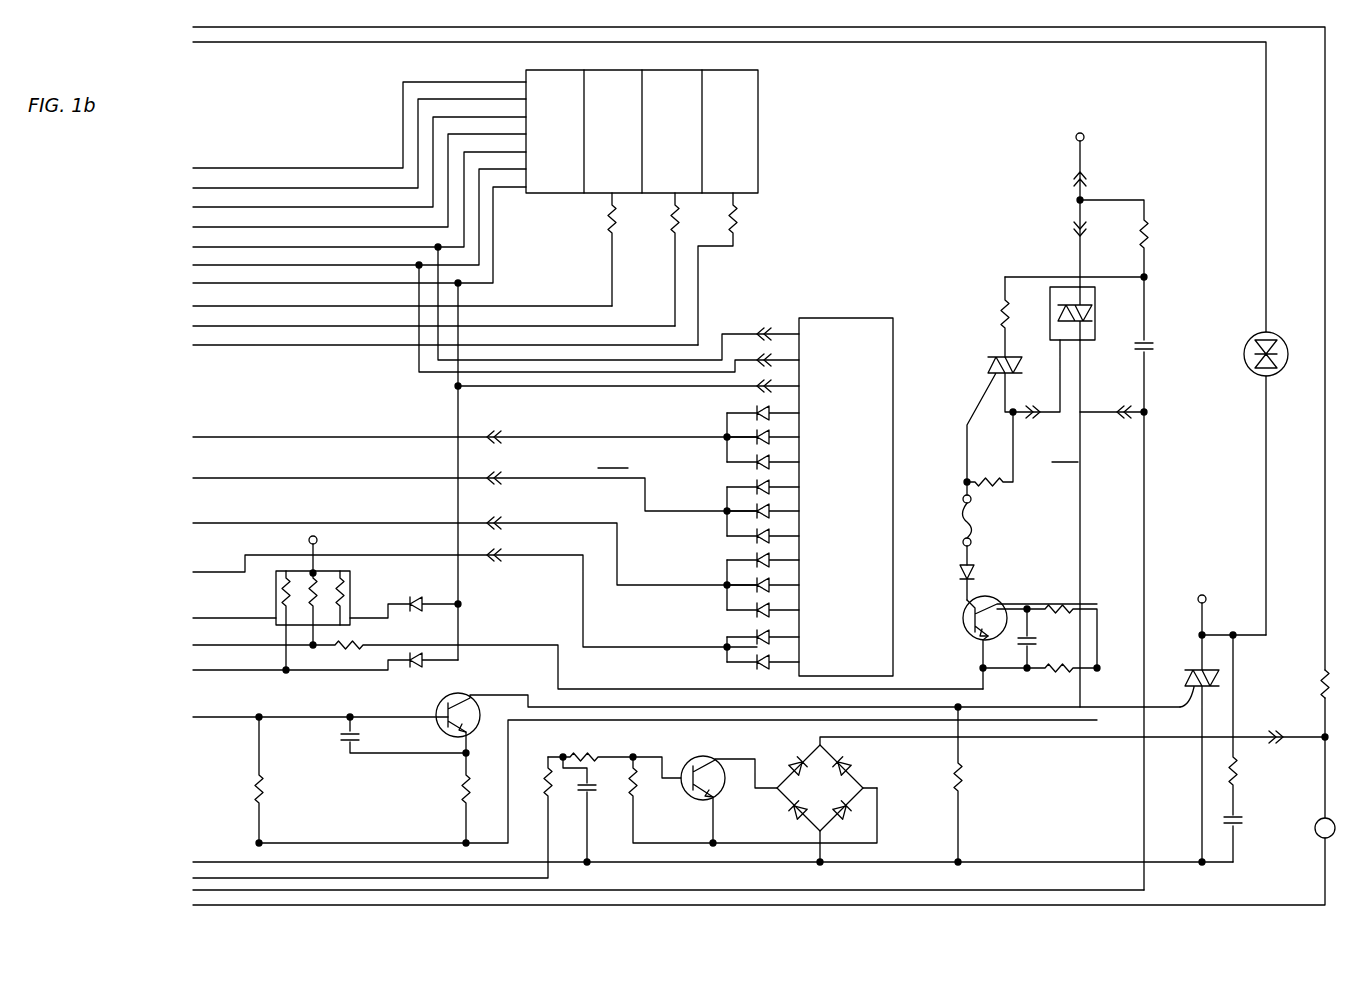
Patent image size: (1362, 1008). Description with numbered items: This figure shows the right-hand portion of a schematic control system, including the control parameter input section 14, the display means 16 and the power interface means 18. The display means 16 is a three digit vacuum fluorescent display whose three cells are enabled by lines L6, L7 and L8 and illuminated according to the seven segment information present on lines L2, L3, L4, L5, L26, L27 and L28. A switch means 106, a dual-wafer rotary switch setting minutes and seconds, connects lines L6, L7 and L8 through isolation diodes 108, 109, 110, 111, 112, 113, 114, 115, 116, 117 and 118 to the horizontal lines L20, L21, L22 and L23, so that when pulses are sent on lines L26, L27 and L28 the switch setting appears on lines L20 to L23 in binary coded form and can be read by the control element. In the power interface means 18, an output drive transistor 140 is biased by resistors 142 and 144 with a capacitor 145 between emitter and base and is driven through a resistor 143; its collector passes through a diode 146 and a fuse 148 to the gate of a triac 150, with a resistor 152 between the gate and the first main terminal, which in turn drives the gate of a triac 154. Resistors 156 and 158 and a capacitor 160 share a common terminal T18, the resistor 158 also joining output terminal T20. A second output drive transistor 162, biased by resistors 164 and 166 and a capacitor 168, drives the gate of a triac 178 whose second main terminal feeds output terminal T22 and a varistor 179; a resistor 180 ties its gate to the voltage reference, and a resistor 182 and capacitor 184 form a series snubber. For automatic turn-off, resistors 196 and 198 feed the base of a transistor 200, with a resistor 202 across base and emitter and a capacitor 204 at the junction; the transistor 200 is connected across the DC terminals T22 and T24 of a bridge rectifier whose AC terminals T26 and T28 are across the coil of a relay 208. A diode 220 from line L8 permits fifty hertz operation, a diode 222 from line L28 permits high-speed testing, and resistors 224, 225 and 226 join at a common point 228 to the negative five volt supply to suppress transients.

The display means 16 is at (760, 142).
The switch means 106 is at (815, 310).
The control parameter input section 14 is at (762, 546).
The power interface means 18 is at (1065, 451).
The isolation diode 108 is at (755, 412).
The isolation diode 109 is at (755, 435).
The isolation diode 110 is at (750, 460).
The isolation diode 111 is at (754, 475).
The isolation diode 112 is at (747, 516).
The isolation diode 113 is at (753, 539).
The isolation diode 114 is at (755, 555).
The isolation diode 115 is at (753, 592).
The isolation diode 116 is at (753, 615).
The isolation diode 117 is at (755, 646).
The isolation diode 118 is at (756, 674).
The output drive transistor 140 is at (964, 626).
The resistor 142 is at (1068, 674).
The resistor 143 is at (345, 651).
The resistor 144 is at (1060, 602).
The capacitor 145 is at (1037, 646).
The diode 146 is at (976, 573).
The fuse 148 is at (971, 527).
The triac 150 is at (1023, 392).
The resistor 152 is at (998, 488).
The triac 154 is at (1062, 272).
The resistor 156 is at (999, 312).
The resistor 158 is at (1148, 234).
The capacitor 160 is at (1150, 352).
The output drive transistor 162 is at (436, 732).
The resistor 164 is at (268, 786).
The resistor 166 is at (458, 791).
The capacitor 168 is at (346, 738).
The triac 178 is at (1186, 676).
The varistor 179 is at (1251, 374).
The resistor 180 is at (964, 784).
The resistor 182 is at (1238, 778).
The capacitor 184 is at (1235, 830).
The resistor 196 is at (540, 779).
The resistor 198 is at (586, 748).
The transistor 200 is at (710, 750).
The resistor 202 is at (652, 796).
The capacitor 204 is at (592, 792).
The relay 208 is at (1314, 830).
The diode 220 is at (432, 586).
The diode 222 is at (422, 673).
The resistor 224 is at (347, 597).
The resistor 225 is at (280, 596).
The resistor 226 is at (318, 576).
The common terminal 228 is at (309, 541).
The line L2 is at (200, 168).
The line L3 is at (200, 188).
The line L4 is at (200, 207).
The line L5 is at (200, 227).
The line L6 is at (553, 306).
The line L7 is at (661, 326).
The line L8 is at (588, 345).
The line L20 is at (520, 437).
The line L21 is at (520, 478).
The line L22 is at (520, 523).
The line L23 is at (520, 555).
The line L26 is at (210, 247).
The line L27 is at (210, 265).
The line L28 is at (210, 283).
The common terminal T18 is at (1098, 283).
The output terminal T20 is at (1084, 137).
The output terminal T22 is at (1205, 596).
The DC terminal T24 is at (864, 786).
The AC terminal T26 is at (818, 743).
The AC terminal T28 is at (817, 830).